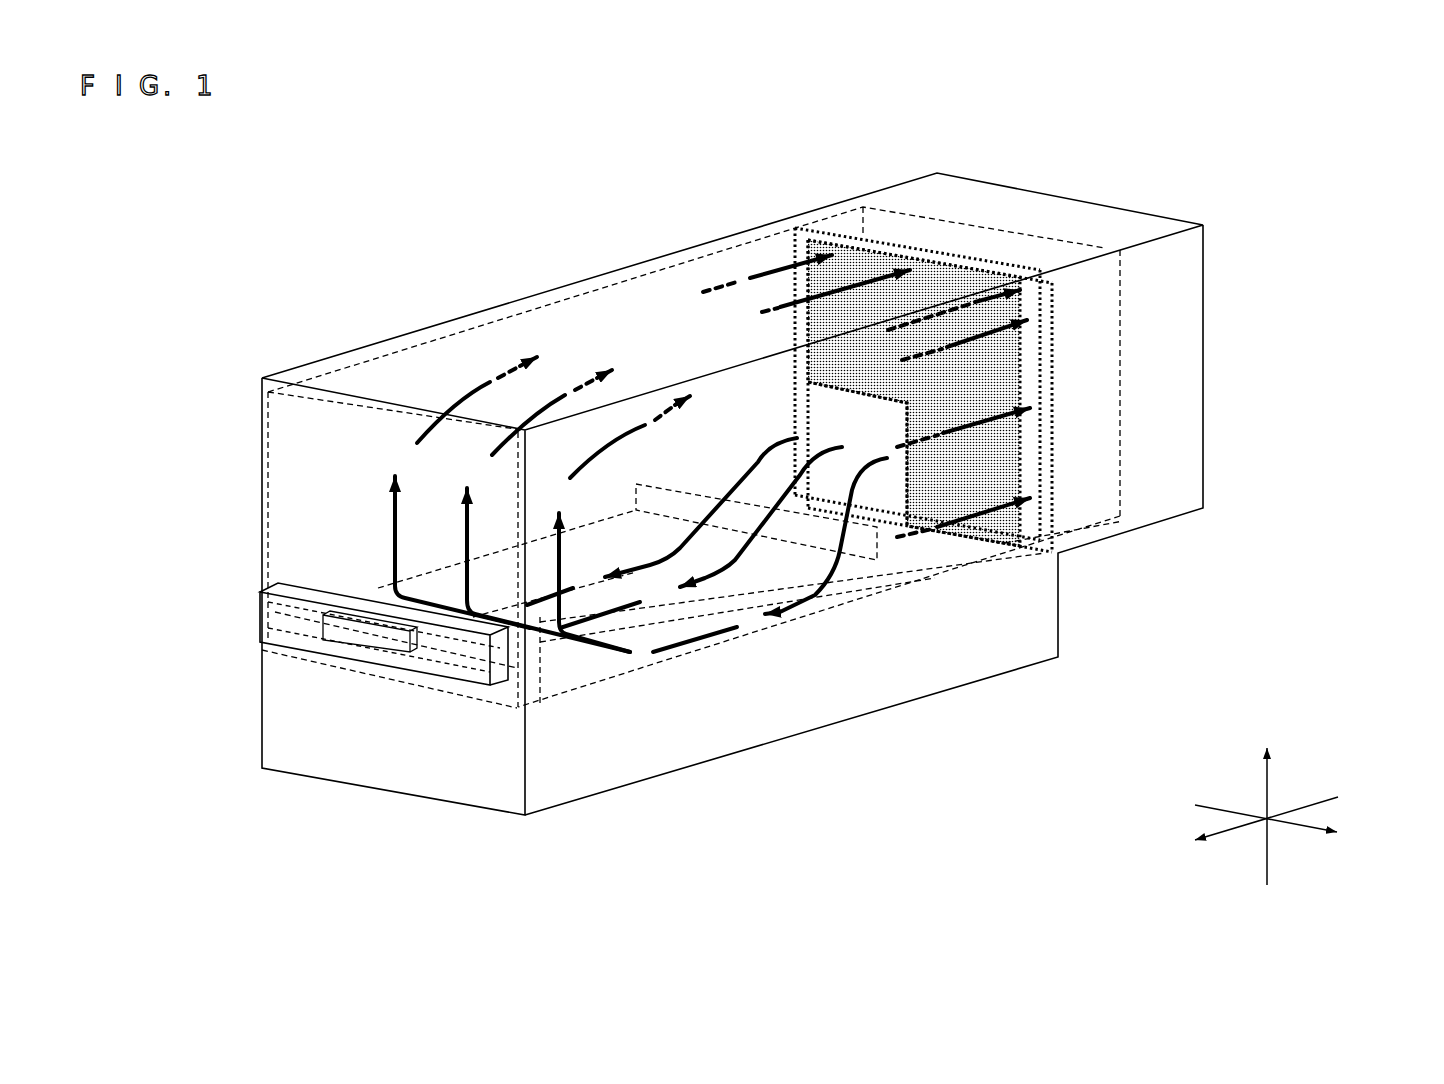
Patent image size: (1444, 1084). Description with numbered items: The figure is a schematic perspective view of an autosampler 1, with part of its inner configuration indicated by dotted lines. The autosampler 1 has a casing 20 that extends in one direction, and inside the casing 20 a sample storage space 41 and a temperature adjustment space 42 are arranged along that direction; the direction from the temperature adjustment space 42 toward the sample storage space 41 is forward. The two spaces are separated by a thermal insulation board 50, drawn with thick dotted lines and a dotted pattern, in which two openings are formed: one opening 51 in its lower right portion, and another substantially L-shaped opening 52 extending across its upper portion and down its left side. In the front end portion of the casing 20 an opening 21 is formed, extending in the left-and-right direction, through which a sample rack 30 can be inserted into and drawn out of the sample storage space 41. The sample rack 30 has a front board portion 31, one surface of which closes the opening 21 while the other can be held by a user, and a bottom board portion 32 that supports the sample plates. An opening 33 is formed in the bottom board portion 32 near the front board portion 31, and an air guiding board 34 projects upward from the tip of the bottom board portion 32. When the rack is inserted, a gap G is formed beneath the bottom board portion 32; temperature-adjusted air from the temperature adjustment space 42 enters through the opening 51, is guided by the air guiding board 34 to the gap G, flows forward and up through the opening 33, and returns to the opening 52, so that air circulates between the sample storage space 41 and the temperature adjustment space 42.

The autosampler 1 is at (420, 230).
The casing 20 is at (292, 445).
The opening 21 is at (313, 650).
The sample rack 30 is at (308, 866).
The front board portion 31 is at (440, 648).
The bottom board portion 32 is at (540, 665).
The opening 33 is at (388, 590).
The air guiding board 34 is at (928, 578).
The sample storage space 41 is at (620, 504).
The temperature adjustment space 42 is at (1097, 404).
The thermal insulation board 50 is at (1003, 530).
The opening 51 is at (847, 427).
The opening 52 is at (1023, 450).
The gap G is at (853, 583).